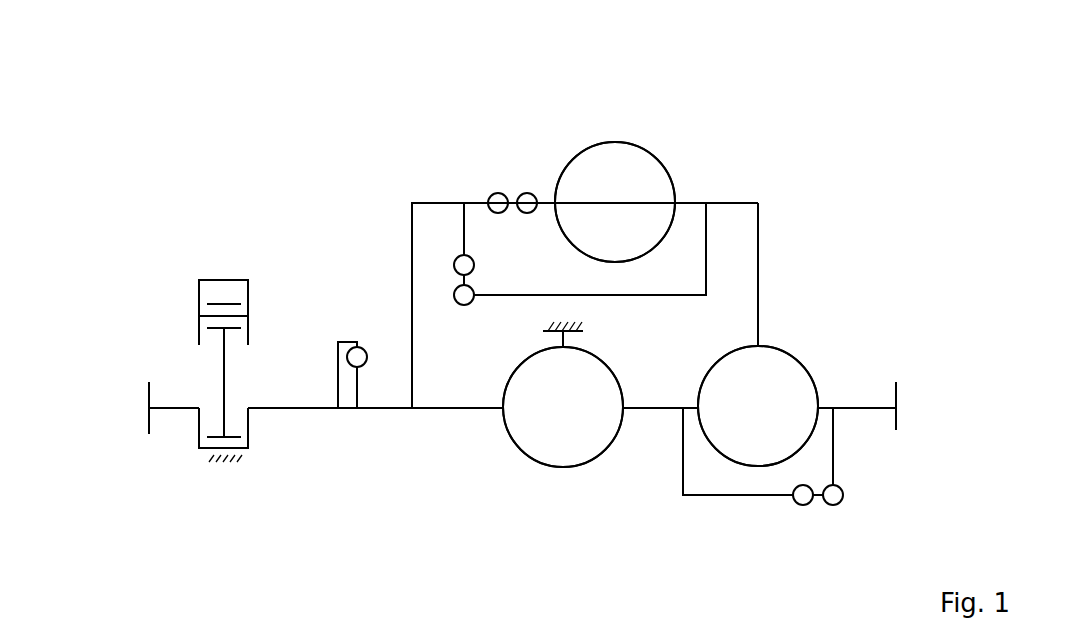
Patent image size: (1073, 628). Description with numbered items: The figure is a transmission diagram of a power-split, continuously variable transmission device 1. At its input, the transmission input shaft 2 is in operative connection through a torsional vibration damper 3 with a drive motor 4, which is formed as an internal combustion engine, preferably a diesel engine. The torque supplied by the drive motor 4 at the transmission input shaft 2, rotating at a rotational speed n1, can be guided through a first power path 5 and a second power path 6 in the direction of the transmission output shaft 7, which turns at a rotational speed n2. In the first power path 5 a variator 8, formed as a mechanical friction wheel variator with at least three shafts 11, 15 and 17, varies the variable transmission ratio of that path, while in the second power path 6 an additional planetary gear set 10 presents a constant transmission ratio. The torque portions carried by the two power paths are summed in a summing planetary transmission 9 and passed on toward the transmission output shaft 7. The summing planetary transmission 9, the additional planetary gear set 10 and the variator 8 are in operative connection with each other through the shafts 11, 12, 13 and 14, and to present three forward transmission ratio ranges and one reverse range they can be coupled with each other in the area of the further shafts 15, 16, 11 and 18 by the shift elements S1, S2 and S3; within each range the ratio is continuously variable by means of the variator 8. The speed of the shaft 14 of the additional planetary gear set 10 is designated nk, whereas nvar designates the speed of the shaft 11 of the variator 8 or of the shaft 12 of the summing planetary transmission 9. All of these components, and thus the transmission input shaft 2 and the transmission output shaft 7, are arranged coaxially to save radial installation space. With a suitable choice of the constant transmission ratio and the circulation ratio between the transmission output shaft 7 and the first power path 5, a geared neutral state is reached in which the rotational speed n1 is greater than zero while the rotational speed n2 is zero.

The transmission device 1 is at (838, 303).
The transmission input shaft 2 is at (370, 410).
The torsional vibration damper 3 is at (348, 357).
The drive motor 4 is at (222, 279).
The first power path 5 is at (517, 473).
The second power path 6 is at (505, 149).
The transmission output shaft 7 is at (876, 405).
The variator 8 is at (565, 452).
The summing planetary transmission 9 is at (750, 433).
The additional planetary gear set 10 is at (615, 168).
The shaft 11 is at (640, 410).
The shaft 12 is at (686, 410).
The shaft 13 is at (760, 290).
The shaft 14 is at (690, 203).
The shaft 15 is at (433, 410).
The shaft 16 is at (540, 198).
The shaft 17 is at (558, 340).
The shaft 18 is at (828, 400).
The shift element S1 is at (492, 197).
The shift element S2 is at (805, 505).
The shift element S3 is at (455, 260).
The rotational speed of the transmission input shaft n1 is at (397, 410).
The rotational speed of the transmission output shaft n2 is at (855, 412).
The rotational speed of the shaft of the additional planetary gear set nk is at (730, 203).
The rotational speed of the variator shaft nvar is at (660, 410).